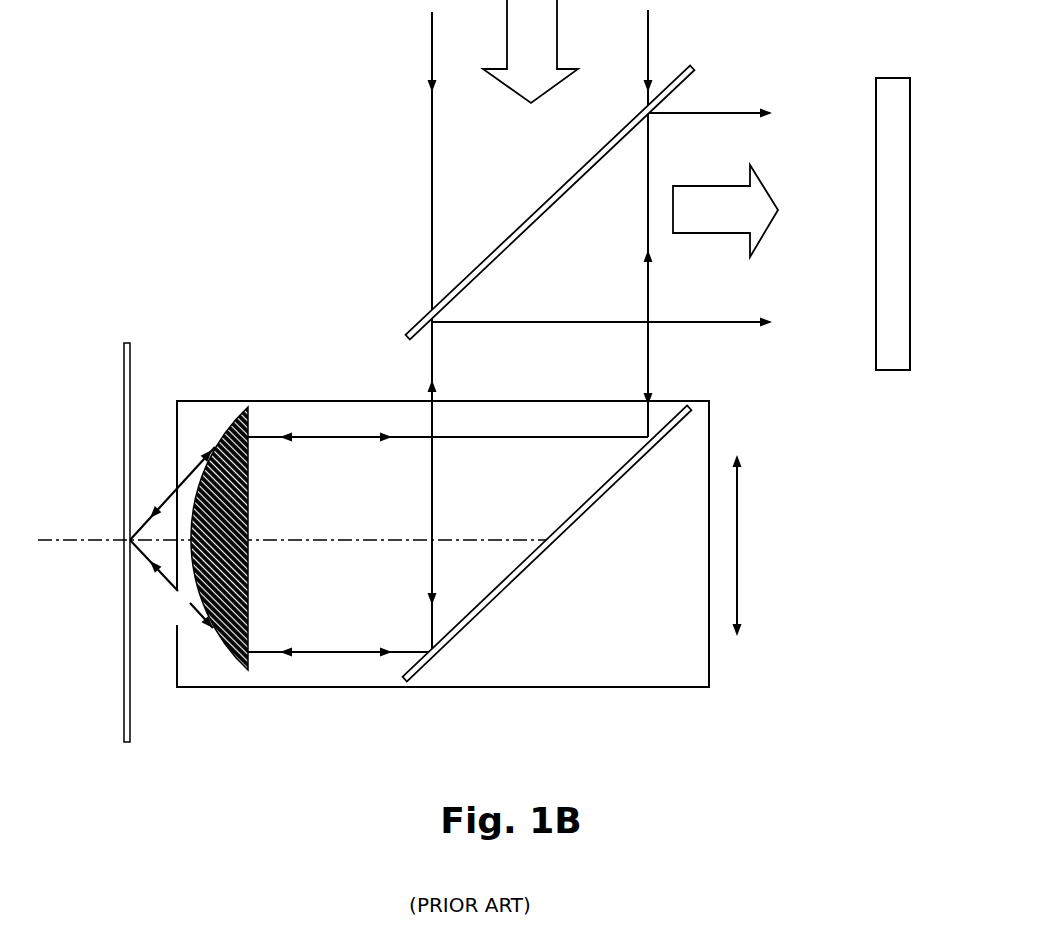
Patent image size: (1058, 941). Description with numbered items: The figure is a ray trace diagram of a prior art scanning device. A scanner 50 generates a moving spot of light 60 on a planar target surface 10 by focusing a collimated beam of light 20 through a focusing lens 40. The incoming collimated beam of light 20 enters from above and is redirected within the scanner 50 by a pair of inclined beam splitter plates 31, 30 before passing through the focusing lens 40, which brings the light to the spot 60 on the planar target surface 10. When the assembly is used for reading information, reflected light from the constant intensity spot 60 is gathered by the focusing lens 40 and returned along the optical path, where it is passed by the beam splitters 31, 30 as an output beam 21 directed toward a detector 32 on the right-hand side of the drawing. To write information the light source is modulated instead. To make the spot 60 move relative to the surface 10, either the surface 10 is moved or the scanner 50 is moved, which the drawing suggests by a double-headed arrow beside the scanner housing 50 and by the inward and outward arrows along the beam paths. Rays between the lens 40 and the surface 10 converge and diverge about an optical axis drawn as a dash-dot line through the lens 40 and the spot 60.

The planar target surface 10 is at (131, 368).
The collimated beam of light 20 is at (530, 51).
The output light beam to detector 21 is at (725, 211).
The beam splitter (movable) 30 is at (612, 487).
The beam splitter 31 is at (530, 216).
The detector 32 is at (893, 224).
The focusing lens 40 is at (249, 475).
The scanner 50 is at (345, 687).
The spot of light 60 is at (130, 550).